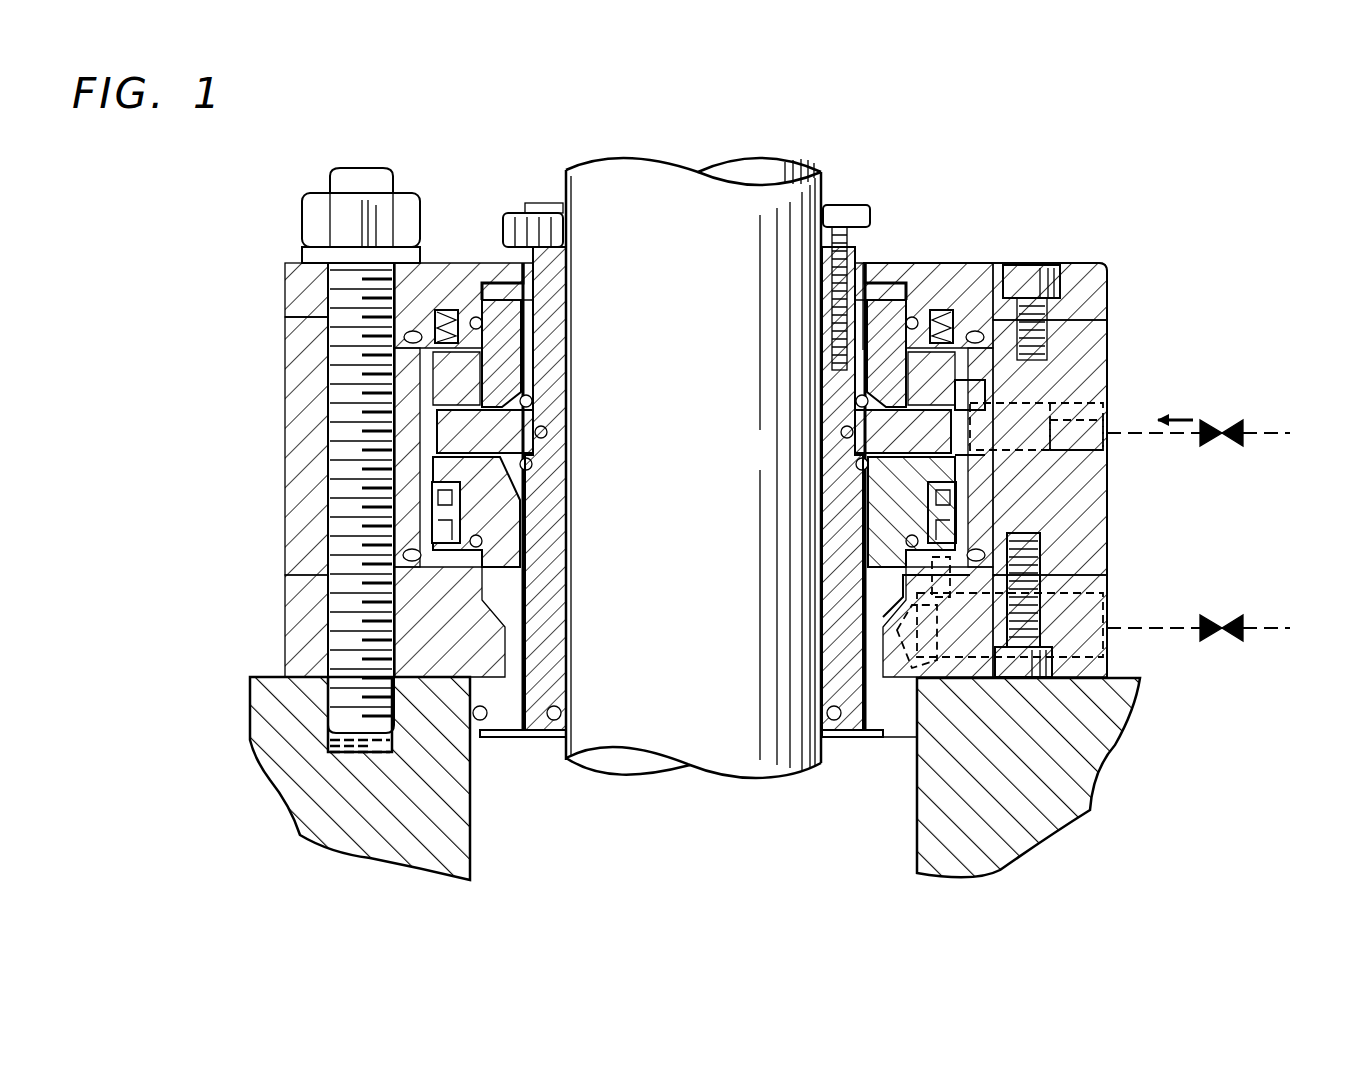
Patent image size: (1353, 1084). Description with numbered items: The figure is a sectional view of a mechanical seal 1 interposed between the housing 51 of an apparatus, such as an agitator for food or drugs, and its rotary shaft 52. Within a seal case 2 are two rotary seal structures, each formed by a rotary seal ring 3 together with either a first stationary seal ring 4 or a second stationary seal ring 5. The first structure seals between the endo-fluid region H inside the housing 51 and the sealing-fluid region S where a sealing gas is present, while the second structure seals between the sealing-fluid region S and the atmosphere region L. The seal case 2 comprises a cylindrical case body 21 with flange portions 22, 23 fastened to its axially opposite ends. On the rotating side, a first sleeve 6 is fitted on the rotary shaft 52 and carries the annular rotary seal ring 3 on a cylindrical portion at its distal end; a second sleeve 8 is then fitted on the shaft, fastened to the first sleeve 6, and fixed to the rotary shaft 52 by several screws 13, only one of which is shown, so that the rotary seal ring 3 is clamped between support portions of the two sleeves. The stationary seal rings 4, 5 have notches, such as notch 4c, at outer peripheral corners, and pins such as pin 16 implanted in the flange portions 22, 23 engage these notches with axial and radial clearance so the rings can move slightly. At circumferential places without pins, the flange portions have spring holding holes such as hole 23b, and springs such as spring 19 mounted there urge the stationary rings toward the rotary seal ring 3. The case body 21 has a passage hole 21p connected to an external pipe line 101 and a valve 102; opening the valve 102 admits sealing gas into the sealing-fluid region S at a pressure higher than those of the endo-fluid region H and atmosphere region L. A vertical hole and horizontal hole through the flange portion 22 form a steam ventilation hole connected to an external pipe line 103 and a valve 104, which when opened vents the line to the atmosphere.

The mechanical seal 1 is at (1036, 214).
The seal case 2 is at (283, 446).
The rotary seal ring 3 is at (1053, 428).
The first stationary seal ring 4 is at (977, 507).
The notch 4c is at (433, 503).
The second stationary seal ring 5 is at (960, 395).
The first sleeve 6 is at (538, 722).
The second sleeve 8 is at (540, 205).
The screw 13 is at (507, 205).
The pin 16 is at (433, 518).
The spring 19 is at (447, 308).
The case body 21 is at (1085, 330).
The passage hole 21p is at (1087, 410).
The flange portion 22 is at (1093, 584).
The flange portion 23 is at (1085, 272).
The spring holding hole 23b is at (435, 323).
The housing 51 is at (340, 800).
The rotary shaft 52 is at (718, 722).
The external pipe line 101 is at (1150, 440).
The valve 102 is at (1235, 412).
The external pipe line 103 is at (1163, 640).
The valve 104 is at (1235, 612).
The atmosphere region L is at (900, 223).
The endo-fluid region H is at (868, 750).
The sealing-fluid region S is at (977, 448).